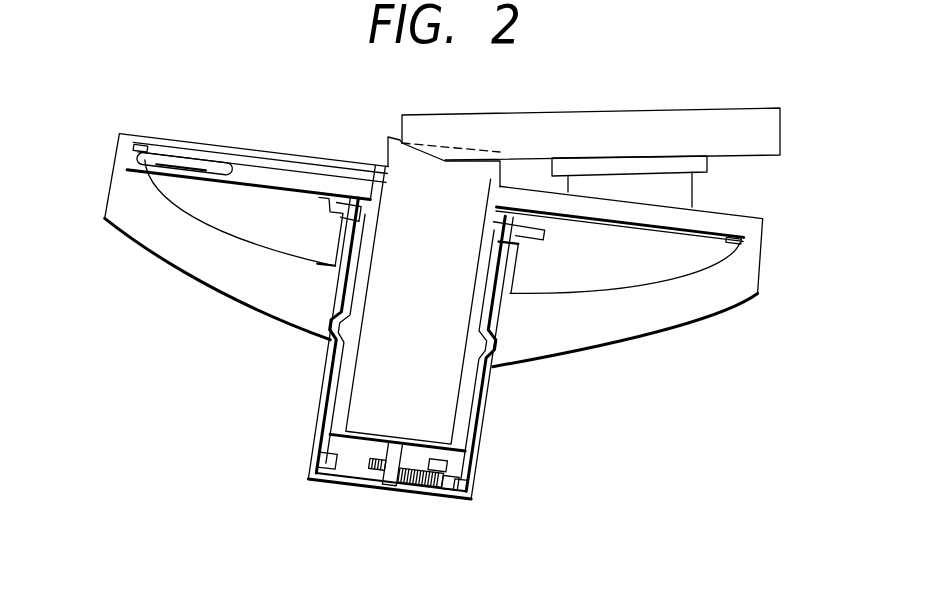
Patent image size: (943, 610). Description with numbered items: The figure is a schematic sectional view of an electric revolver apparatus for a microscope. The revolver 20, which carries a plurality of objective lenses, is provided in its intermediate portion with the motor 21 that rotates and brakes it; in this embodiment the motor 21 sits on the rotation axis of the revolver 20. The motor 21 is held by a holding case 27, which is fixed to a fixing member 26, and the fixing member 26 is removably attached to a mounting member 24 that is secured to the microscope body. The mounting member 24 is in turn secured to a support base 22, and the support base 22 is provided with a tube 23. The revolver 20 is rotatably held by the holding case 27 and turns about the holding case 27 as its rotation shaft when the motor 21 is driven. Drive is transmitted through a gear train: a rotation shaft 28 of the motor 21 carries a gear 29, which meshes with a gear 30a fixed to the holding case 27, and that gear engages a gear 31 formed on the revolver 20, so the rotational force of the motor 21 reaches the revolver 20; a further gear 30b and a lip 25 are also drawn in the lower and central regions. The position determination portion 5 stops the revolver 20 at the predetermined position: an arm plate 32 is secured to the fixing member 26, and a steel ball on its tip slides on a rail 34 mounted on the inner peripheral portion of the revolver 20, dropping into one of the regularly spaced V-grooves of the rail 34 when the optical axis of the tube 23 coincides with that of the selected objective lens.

The position determination portion 5 is at (187, 162).
The revolver 20 is at (730, 288).
The motor 21 is at (443, 380).
The support base 22 is at (750, 112).
The tube 23 is at (682, 190).
The mounting member 24 is at (393, 148).
The inner lip 25 is at (337, 212).
The fixing member 26 is at (215, 232).
The holding case 27 is at (460, 427).
The rotation shaft 28 is at (370, 485).
The gear 29 is at (405, 470).
The gear 30a is at (433, 483).
The nut 30b is at (448, 463).
The gear 31 is at (340, 478).
The arm plate 32 is at (217, 160).
The rail 34 is at (135, 158).